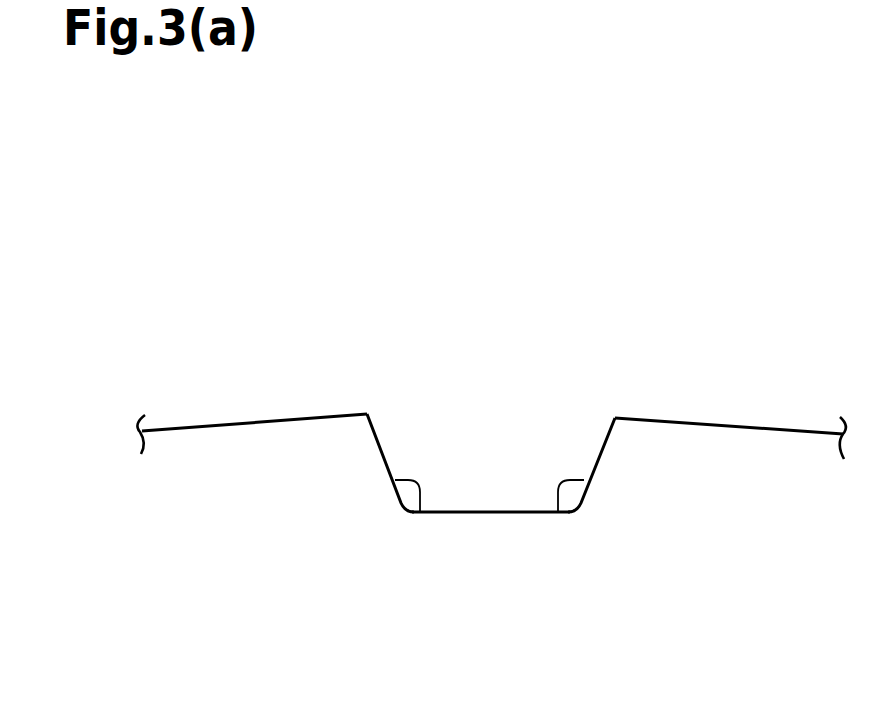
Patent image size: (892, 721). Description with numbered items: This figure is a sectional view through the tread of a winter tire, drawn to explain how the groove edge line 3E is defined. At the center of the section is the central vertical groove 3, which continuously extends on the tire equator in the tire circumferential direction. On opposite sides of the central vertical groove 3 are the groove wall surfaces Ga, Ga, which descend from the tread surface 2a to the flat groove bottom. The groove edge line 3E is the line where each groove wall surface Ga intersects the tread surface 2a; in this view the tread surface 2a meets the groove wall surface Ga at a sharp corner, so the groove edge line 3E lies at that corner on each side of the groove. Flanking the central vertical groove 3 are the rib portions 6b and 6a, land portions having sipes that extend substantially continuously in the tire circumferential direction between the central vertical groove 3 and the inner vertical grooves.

The tread surface 2a is at (302, 415).
The groove edge line 3E is at (367, 414).
The central vertical groove 3 is at (492, 405).
The groove wall surface Ga is at (420, 512).
The rib portion 6b is at (223, 457).
The rib portion 6a is at (762, 457).